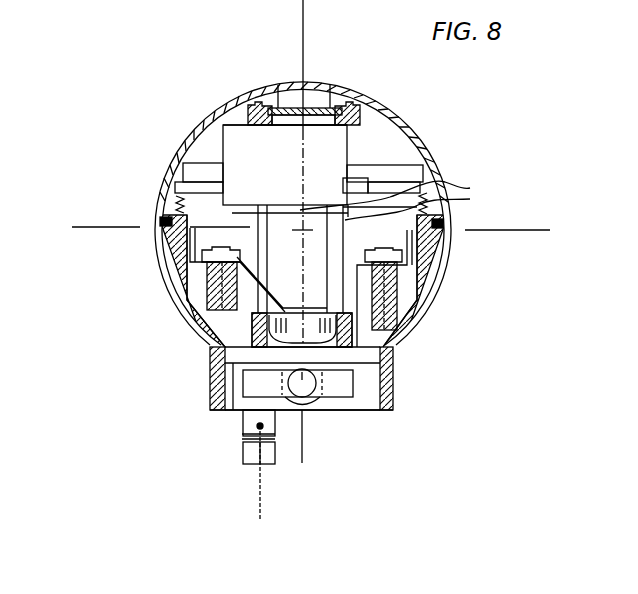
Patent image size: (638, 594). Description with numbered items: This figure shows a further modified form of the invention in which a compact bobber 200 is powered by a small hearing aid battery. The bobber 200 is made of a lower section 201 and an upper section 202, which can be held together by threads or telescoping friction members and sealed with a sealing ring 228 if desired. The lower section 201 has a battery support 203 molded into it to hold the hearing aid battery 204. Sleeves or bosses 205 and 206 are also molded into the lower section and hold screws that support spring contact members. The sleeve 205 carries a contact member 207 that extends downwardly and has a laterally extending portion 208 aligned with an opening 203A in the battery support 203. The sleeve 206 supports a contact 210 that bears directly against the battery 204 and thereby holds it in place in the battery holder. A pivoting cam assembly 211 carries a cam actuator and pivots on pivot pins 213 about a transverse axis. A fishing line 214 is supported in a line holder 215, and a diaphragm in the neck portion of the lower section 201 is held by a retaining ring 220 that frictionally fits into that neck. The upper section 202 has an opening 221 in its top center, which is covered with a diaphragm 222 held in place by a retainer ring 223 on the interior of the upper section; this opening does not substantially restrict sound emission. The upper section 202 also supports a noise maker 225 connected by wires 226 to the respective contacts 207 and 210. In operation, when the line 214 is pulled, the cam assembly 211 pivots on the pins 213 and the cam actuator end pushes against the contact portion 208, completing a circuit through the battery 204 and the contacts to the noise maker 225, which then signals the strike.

The bobber 200 is at (444, 170).
The lower section 201 is at (447, 263).
The upper section 202 is at (224, 106).
The battery support 203 is at (393, 357).
The opening 203A is at (273, 363).
The battery 204 is at (310, 317).
The sleeve 205 is at (398, 312).
The sleeve 206 is at (207, 285).
The contact member 207 is at (393, 345).
The laterally extending portion 208 is at (393, 407).
The contact 210 is at (178, 279).
The pivoting cam assembly 211 is at (315, 398).
The pivot pins 213 is at (306, 388).
The fishing line 214 is at (262, 503).
The line holder 215 is at (241, 466).
The retaining ring 220 is at (212, 372).
The opening 221 is at (318, 90).
The diaphragm 222 is at (288, 107).
The retainer ring 223 is at (252, 121).
The noise maker 225 is at (337, 143).
The wires 226 is at (403, 200).
The sealing ring 228 is at (160, 221).